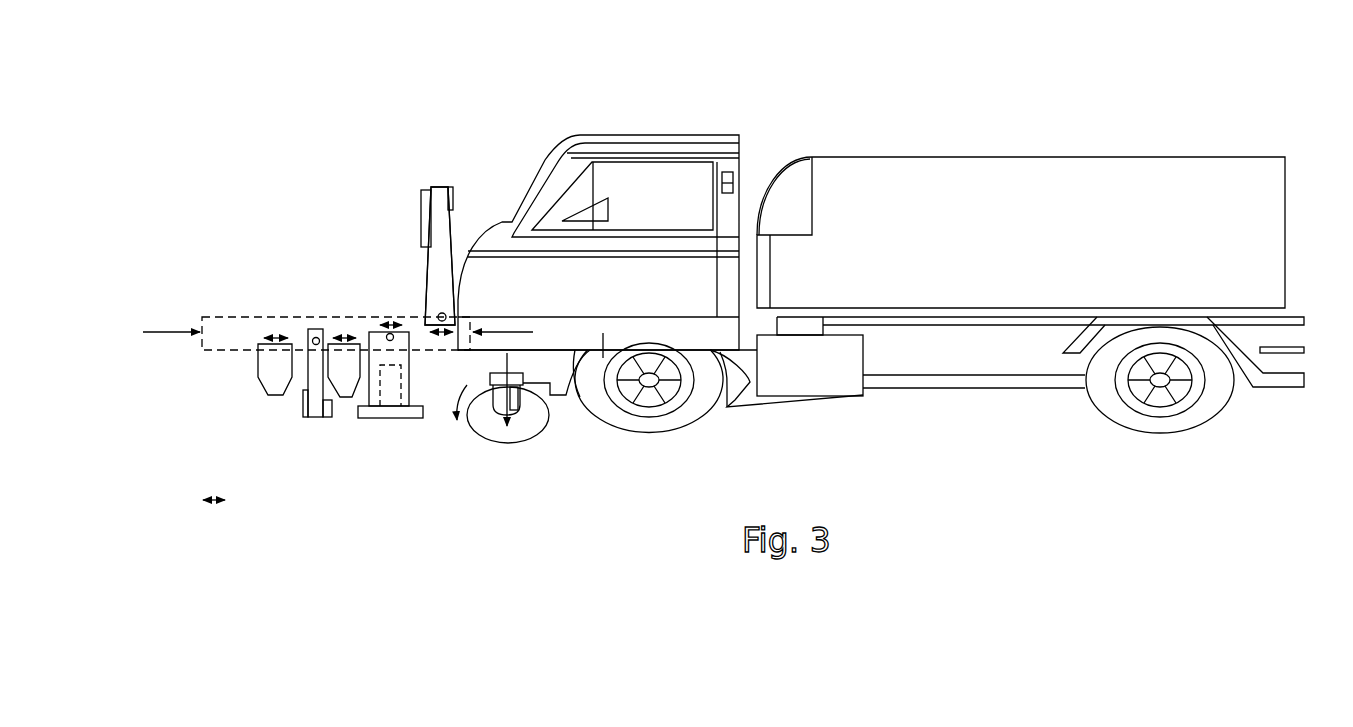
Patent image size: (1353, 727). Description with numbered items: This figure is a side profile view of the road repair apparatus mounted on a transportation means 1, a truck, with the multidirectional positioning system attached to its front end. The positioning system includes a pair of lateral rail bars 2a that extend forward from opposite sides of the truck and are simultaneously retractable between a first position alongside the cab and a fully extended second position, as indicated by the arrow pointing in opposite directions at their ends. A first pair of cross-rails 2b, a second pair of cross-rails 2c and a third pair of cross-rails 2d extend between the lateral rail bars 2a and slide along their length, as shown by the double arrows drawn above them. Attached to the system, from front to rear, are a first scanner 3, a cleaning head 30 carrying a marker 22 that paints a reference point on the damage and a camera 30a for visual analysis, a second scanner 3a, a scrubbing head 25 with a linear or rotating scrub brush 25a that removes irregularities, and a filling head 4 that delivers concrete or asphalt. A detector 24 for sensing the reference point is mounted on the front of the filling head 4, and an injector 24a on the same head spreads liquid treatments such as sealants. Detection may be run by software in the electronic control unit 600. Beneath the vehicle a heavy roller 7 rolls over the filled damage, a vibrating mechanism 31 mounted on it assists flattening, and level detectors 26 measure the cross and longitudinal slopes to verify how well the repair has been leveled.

The transportation means 1 is at (936, 114).
The electronic control unit 600 is at (608, 198).
The lateral rail bars 2a is at (580, 360).
The first pair of cross-rails 2b is at (313, 340).
The second pair of cross-rails 2c is at (388, 334).
The third pair of cross-rails 2d is at (437, 313).
The first scanner 3 is at (257, 378).
The second scanner 3a is at (345, 400).
The filling head 4 is at (437, 187).
The heavy roller 7 is at (477, 432).
The marker 22 is at (305, 415).
The detector 24 is at (450, 185).
The injector 24a is at (425, 190).
The scrubbing head 25 is at (413, 368).
The scrub brush 25a is at (387, 420).
The level detectors 26 is at (518, 412).
The cleaning head 30 is at (313, 420).
The camera 30a is at (337, 418).
The vibrating mechanism 31 is at (515, 373).